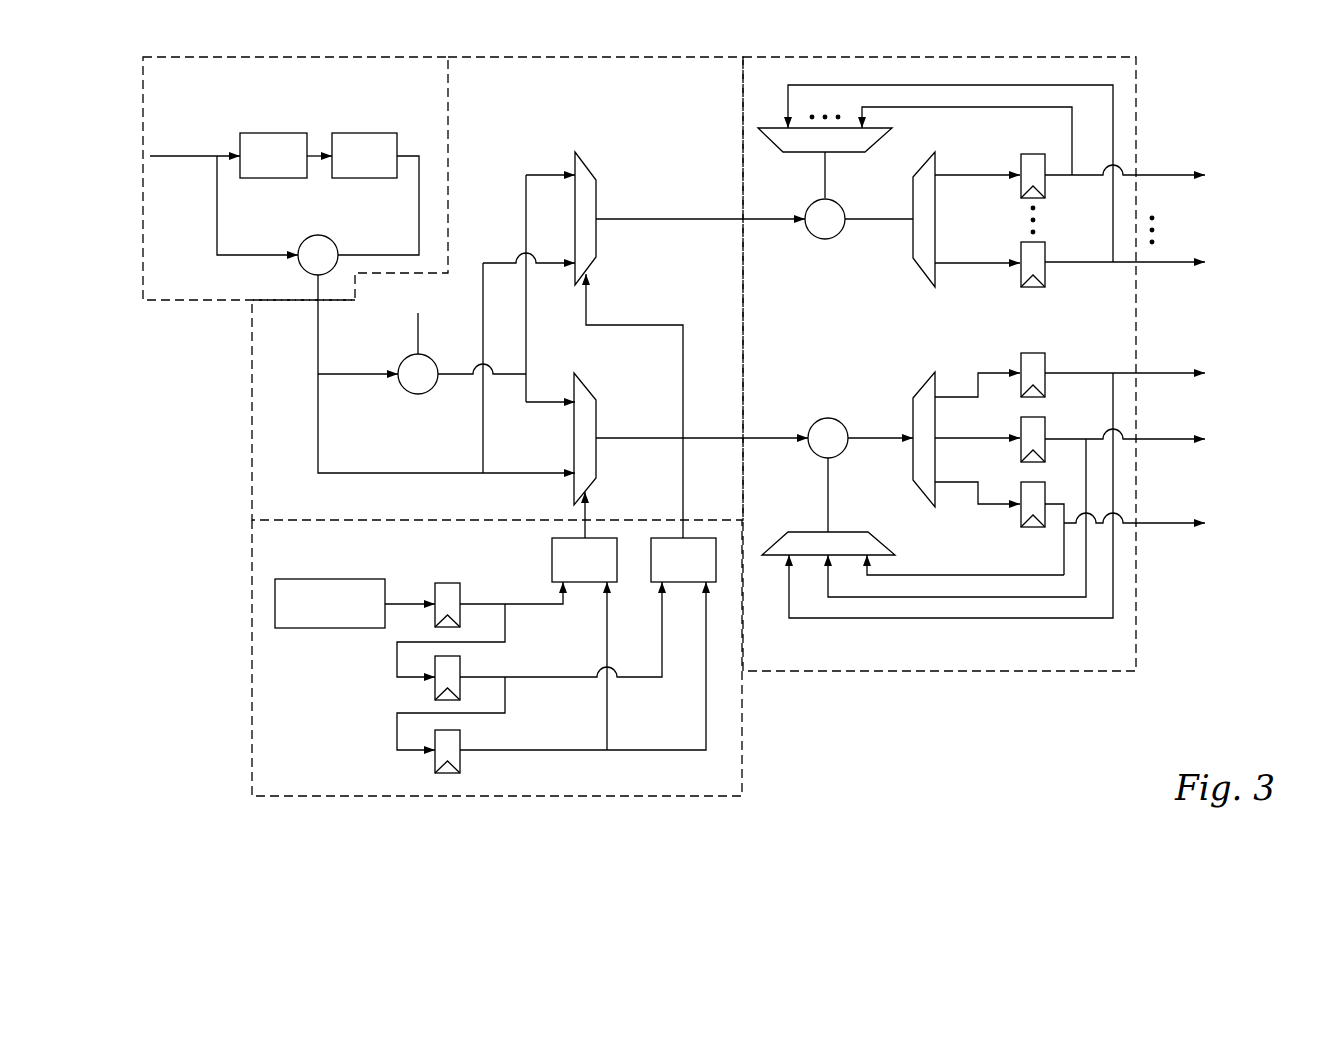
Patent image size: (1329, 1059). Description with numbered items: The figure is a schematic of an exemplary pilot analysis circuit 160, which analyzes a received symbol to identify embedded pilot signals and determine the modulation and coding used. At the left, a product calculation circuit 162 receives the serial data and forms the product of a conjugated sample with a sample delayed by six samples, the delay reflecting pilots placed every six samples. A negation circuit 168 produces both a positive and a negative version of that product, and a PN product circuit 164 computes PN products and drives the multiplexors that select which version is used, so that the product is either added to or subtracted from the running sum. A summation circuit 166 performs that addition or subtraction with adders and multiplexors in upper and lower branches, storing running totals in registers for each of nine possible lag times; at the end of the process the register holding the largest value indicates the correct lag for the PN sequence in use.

The pilot analysis circuit 160 is at (978, 771).
The product calculation circuit 162 is at (427, 57).
The PN product circuit 164 is at (742, 760).
The summation circuit 166 is at (1102, 671).
The negation circuit 168 is at (703, 57).